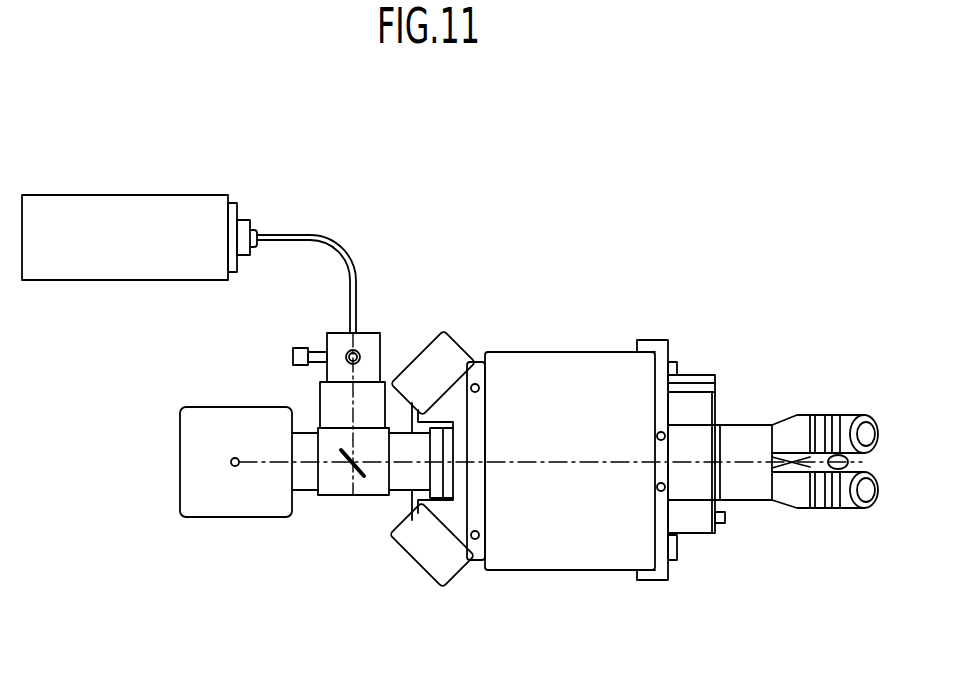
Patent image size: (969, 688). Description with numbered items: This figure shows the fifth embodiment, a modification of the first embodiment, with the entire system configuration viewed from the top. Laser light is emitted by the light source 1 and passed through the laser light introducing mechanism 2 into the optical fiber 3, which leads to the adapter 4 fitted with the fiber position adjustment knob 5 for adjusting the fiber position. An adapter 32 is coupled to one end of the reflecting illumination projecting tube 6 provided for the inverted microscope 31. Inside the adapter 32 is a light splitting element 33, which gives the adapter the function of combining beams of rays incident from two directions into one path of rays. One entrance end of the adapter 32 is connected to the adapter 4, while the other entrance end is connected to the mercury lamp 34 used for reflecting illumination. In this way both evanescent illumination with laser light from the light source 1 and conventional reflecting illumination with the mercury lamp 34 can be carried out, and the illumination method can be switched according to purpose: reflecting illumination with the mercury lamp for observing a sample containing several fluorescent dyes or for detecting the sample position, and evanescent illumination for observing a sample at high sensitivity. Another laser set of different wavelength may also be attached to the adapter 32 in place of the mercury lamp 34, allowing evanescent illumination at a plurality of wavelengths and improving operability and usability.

The light source 1 is at (80, 272).
The laser light introducing mechanism 2 is at (244, 254).
The optical fiber 3 is at (322, 234).
The adapter 4 is at (368, 345).
The fiber position adjustment knob 5 is at (293, 353).
The reflecting illumination projecting tube 6 is at (398, 493).
The inverted microscope 31 is at (472, 585).
The adapter 32 is at (325, 495).
The light splitting element 33 is at (348, 495).
The mercury lamp 34 is at (192, 485).